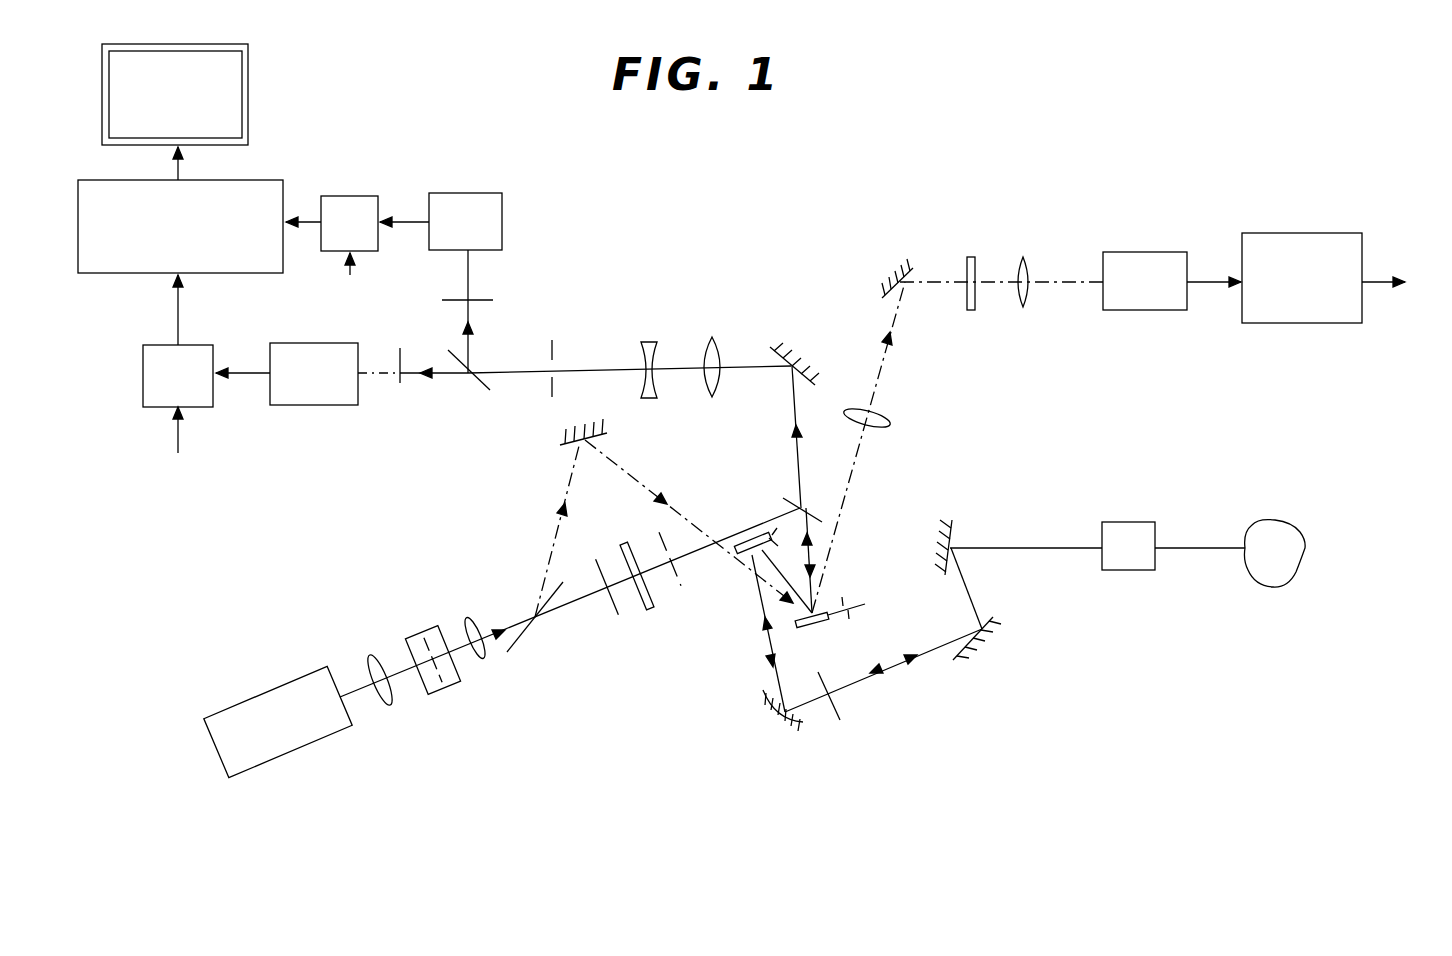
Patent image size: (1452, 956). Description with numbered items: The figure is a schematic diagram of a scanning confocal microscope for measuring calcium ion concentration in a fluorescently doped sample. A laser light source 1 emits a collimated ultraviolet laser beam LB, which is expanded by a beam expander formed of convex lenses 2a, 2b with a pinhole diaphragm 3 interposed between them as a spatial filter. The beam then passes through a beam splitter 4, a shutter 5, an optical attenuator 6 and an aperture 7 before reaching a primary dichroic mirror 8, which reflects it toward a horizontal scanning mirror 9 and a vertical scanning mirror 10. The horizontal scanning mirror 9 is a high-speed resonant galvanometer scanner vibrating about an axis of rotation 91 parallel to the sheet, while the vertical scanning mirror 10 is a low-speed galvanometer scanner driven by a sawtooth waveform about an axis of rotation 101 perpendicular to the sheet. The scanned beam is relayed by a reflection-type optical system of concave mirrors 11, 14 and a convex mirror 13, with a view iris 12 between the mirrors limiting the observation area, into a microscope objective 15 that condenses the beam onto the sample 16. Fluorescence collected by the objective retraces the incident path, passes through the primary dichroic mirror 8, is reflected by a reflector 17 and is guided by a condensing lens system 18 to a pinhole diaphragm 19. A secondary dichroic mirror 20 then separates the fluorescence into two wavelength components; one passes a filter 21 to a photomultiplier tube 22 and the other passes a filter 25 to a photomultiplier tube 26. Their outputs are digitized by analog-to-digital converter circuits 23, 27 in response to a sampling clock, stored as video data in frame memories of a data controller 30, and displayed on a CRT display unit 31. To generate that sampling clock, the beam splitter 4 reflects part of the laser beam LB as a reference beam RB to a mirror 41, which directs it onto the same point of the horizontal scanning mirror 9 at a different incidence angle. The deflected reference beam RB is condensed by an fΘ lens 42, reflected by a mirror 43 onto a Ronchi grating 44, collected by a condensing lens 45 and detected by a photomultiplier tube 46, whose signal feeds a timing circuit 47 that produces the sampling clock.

The laser light source 1 is at (270, 757).
The convex lens 2a is at (385, 700).
The convex lens 2b is at (482, 660).
The pinhole diaphragm 3 is at (437, 690).
The beam splitter 4 is at (518, 640).
The shutter 5 is at (613, 607).
The optical attenuator 6 is at (645, 610).
The aperture 7 is at (682, 585).
The primary dichroic mirror 8 is at (795, 500).
The horizontal scanning mirror 9 is at (822, 607).
The axis of rotation 91 is at (865, 605).
The vertical scanning mirror 10 is at (745, 557).
The axis of rotation 101 is at (752, 535).
The concave mirror 11 is at (800, 718).
The view iris 12 is at (840, 710).
The convex mirror 13 is at (975, 640).
The concave mirror 14 is at (958, 540).
The microscope objective 15 is at (1130, 570).
The sample 16 is at (1268, 587).
The reflector 17 is at (770, 347).
The condensing lens system 18 is at (724, 330).
The pinhole diaphragm 19 is at (555, 350).
The secondary dichroic mirror 20 is at (482, 391).
The filter 21 is at (402, 383).
The photomultiplier tube 22 is at (298, 405).
The analog-to-digital converter circuit 23 is at (143, 386).
The filter 25 is at (487, 297).
The photomultiplier tube 26 is at (490, 193).
The analog-to-digital converter circuit 27 is at (361, 196).
The data controller 30 is at (283, 180).
The CRT display unit 31 is at (249, 89).
The mirror 41 is at (560, 445).
The fΘ lens 42 is at (885, 412).
The mirror 43 is at (918, 277).
The Ronchi grating 44 is at (972, 257).
The condensing lens 45 is at (1027, 258).
The photomultiplier tube 46 is at (1165, 252).
The timing circuit 47 is at (1312, 233).
The reference beam RB is at (555, 556).
The laser beam LB is at (733, 565).